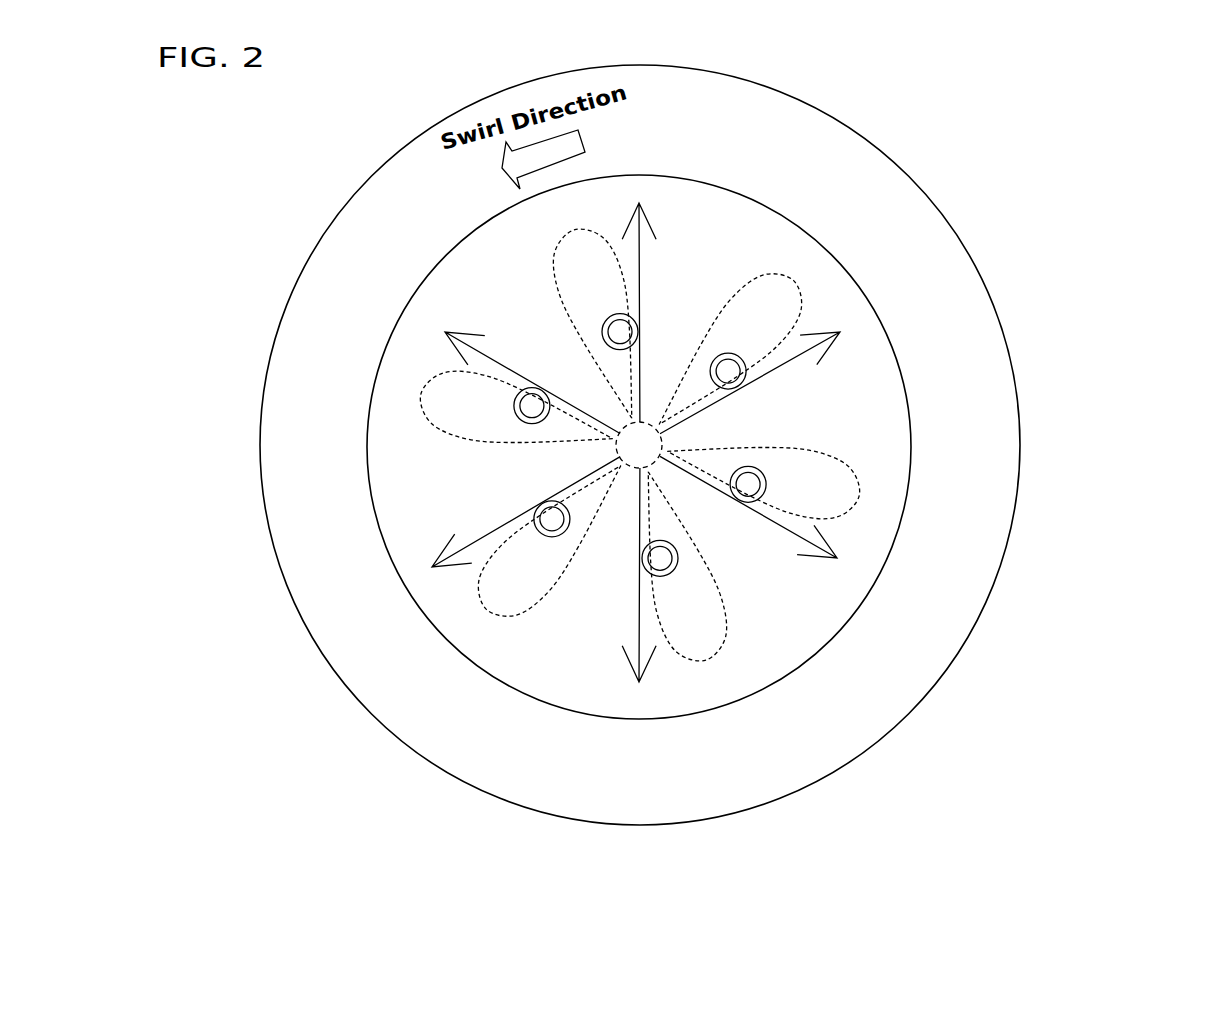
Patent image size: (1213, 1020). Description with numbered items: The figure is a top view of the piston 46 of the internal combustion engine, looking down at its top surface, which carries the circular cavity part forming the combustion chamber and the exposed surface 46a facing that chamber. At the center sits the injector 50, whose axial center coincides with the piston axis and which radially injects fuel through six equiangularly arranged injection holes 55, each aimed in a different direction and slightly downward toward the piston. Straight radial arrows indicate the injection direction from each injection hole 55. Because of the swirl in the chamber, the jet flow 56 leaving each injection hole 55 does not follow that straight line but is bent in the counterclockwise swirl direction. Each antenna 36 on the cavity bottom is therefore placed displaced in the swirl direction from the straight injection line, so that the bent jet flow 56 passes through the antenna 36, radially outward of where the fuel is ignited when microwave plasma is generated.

The piston 46 is at (985, 238).
The exposed surface 46a is at (972, 552).
The injector 50 is at (618, 455).
The injection hole 55 is at (665, 428).
The antenna 36 is at (768, 480).
The jet flow 56 is at (762, 262).